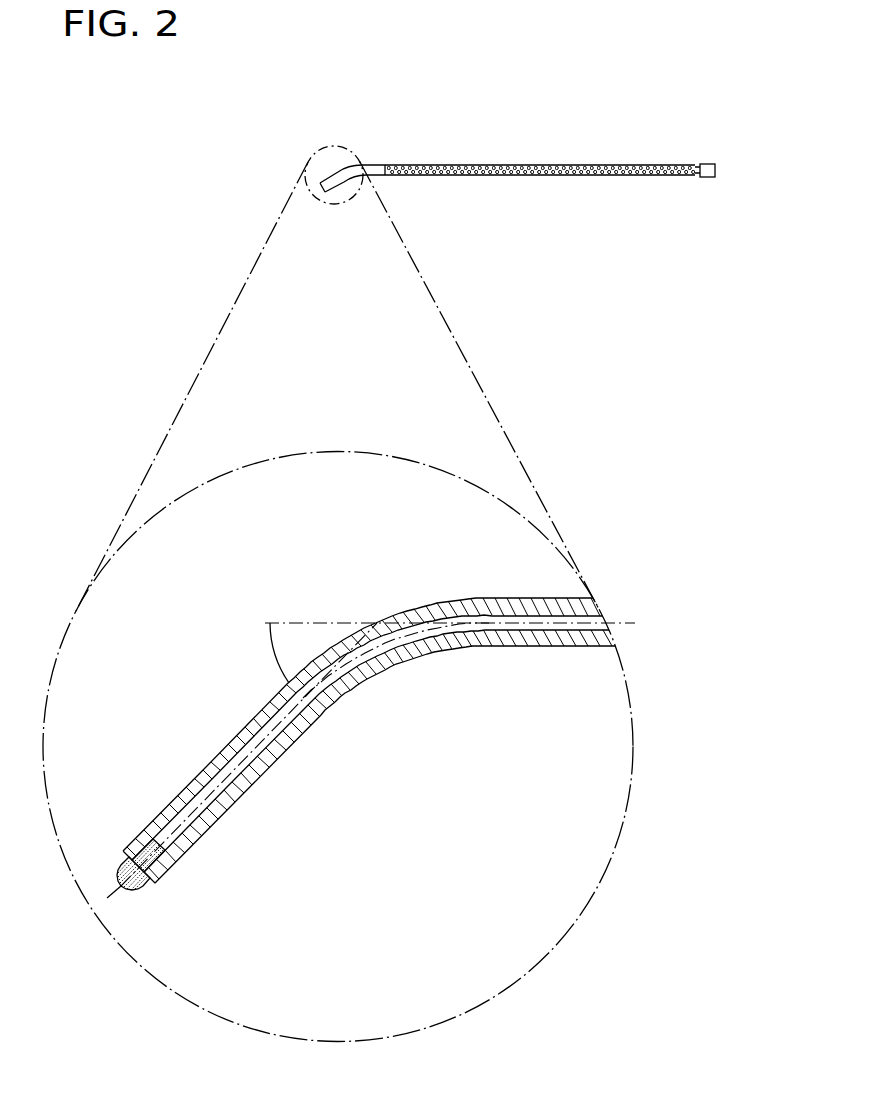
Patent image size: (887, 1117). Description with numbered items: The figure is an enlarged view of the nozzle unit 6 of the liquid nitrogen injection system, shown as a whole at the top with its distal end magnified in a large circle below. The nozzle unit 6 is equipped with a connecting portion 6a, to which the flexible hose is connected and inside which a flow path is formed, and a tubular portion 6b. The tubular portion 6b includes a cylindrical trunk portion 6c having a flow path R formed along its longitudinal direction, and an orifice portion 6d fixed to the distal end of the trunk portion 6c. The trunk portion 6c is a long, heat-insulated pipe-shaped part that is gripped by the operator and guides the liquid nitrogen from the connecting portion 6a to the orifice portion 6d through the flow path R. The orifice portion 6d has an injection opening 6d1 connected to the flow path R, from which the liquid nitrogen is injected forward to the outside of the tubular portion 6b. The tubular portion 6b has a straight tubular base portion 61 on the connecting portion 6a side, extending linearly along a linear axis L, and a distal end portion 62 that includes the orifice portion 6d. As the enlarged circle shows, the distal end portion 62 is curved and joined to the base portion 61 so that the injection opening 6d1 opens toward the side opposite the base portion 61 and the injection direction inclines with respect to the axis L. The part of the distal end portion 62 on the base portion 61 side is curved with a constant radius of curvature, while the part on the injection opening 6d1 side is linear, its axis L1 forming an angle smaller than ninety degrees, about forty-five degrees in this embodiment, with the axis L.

The nozzle unit 6 is at (409, 511).
The connecting portion 6a is at (703, 164).
The tubular portion 6b is at (411, 467).
The trunk portion 6c is at (440, 600).
The orifice portion 6d is at (137, 895).
The injection opening 6d1 is at (123, 888).
The base portion 61 is at (537, 178).
The distal end portion 62 is at (327, 172).
The axis L is at (363, 620).
The axis L1 is at (210, 812).
The flow path R is at (490, 627).